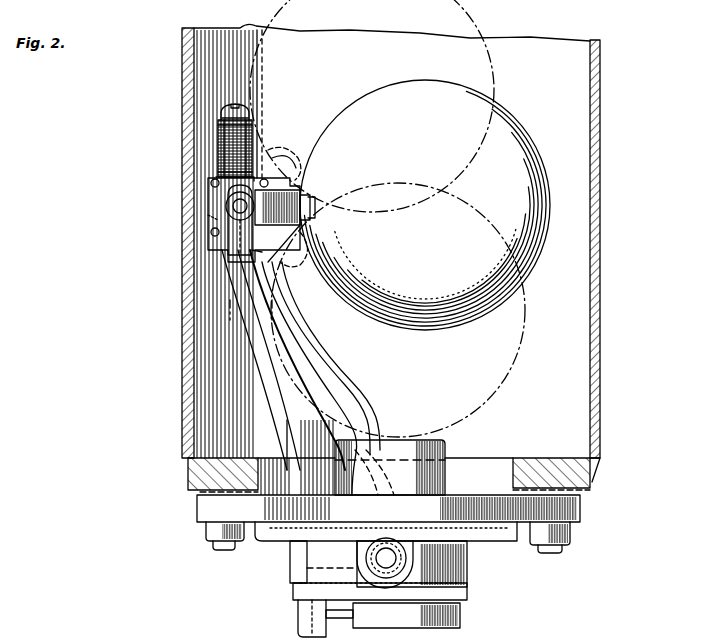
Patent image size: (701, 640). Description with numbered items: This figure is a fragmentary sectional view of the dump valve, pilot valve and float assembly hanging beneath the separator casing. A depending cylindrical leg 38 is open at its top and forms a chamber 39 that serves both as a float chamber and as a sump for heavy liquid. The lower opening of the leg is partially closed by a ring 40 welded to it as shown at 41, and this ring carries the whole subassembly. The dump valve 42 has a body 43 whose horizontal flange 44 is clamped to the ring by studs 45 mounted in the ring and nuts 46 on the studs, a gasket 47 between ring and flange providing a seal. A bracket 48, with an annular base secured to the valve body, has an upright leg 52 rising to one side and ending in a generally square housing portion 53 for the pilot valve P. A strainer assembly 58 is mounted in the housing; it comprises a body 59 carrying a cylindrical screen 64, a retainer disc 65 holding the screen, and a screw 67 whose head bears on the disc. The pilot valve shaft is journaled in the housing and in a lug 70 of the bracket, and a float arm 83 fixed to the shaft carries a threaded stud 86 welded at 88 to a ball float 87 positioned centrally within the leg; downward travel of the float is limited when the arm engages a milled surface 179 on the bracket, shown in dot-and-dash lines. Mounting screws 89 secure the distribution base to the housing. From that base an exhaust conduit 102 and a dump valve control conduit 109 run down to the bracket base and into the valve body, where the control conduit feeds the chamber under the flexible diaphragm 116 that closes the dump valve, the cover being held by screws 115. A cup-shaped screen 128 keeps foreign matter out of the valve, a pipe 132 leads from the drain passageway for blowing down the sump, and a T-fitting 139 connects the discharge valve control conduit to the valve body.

The depending cylindrical leg 38 is at (600, 195).
The chamber 39 is at (600, 274).
The ring 40 is at (545, 466).
The weld 41 is at (592, 480).
The gasket 47 is at (580, 500).
The horizontal flange 44 is at (578, 515).
The nuts 46 is at (206, 530).
The studs 45 is at (226, 551).
The dump valve 42 is at (468, 568).
The body 43 is at (465, 560).
The pipe 132 is at (377, 537).
The flexible diaphragm 116 is at (455, 586).
The T-fitting 139 is at (298, 620).
The screws 115 is at (455, 604).
The cup-shaped screen 128 is at (440, 450).
The bracket 48 is at (274, 451).
The ball float 87 is at (520, 132).
The upright leg 52 is at (228, 325).
The strainer assembly 58 is at (208, 136).
The screw 67 is at (228, 110).
The screen retainer disc 65 is at (218, 117).
The cylindrical screen 64 is at (217, 143).
The body 59 is at (214, 172).
The housing portion 53 is at (210, 193).
The pilot valve P is at (200, 211).
The lug 70 is at (212, 227).
The mounting screws 89 is at (212, 235).
The float arm 83 is at (298, 192).
The threaded stud 86 is at (309, 208).
The welding 88 is at (309, 220).
The milled surface 179 is at (255, 250).
The dump valve control conduit 109 is at (318, 407).
The exhaust conduit 102 is at (352, 427).